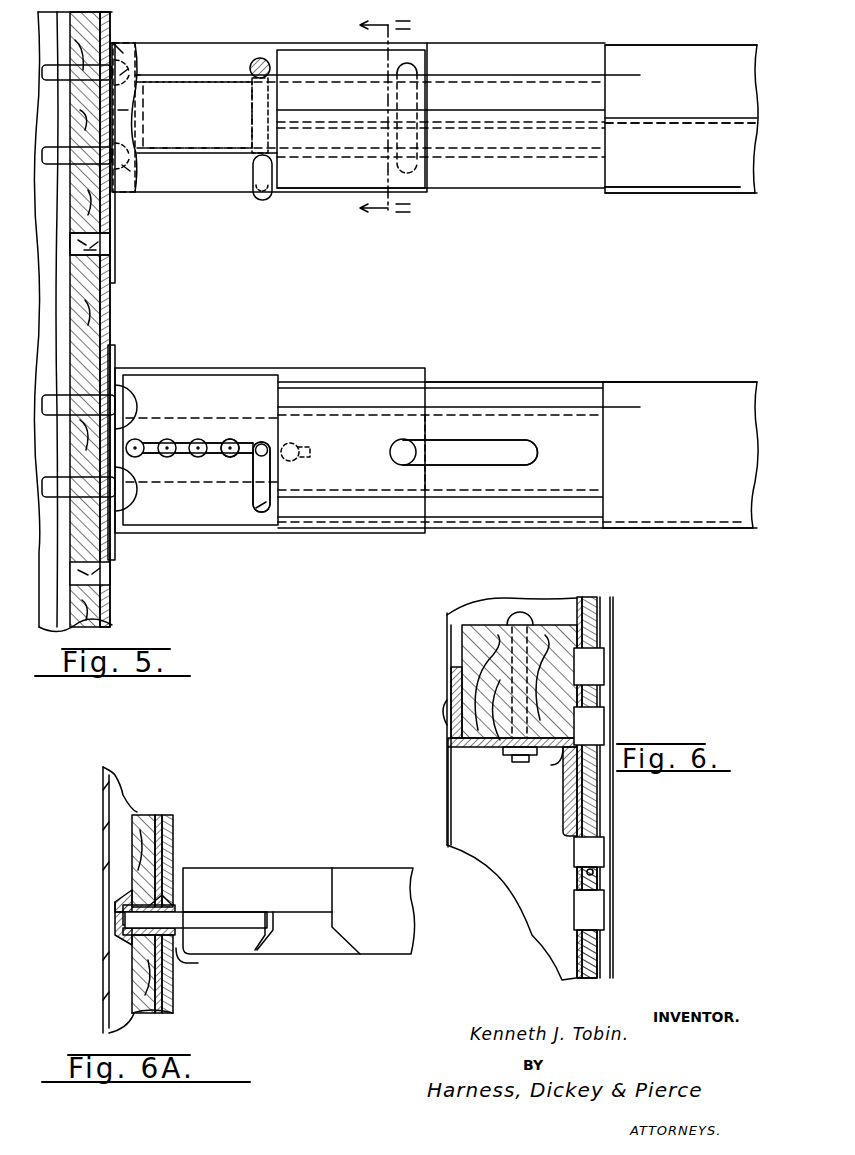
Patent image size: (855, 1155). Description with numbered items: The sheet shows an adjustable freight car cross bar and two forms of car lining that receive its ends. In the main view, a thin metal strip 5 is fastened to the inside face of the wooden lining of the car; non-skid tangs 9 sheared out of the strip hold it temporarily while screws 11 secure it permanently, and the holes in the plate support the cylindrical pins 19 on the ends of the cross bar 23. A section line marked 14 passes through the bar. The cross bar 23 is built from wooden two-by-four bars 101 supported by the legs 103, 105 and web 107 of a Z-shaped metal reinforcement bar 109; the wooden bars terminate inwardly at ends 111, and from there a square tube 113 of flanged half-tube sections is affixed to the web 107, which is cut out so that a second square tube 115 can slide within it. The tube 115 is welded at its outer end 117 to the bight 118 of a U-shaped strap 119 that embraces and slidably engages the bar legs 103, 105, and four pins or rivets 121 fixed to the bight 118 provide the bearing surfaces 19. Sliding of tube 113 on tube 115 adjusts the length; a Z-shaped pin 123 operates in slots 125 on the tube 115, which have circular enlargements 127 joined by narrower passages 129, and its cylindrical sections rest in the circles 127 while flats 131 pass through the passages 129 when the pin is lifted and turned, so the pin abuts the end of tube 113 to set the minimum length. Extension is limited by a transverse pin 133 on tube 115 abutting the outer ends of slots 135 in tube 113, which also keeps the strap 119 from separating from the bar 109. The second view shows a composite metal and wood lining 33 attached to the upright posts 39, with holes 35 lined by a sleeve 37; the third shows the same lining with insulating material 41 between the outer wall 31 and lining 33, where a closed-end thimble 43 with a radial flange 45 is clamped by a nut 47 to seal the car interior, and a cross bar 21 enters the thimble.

In FIG. 5, the metal strip 5 is at (112, 283).
In FIG. 5, the non-skid tangs 9 is at (112, 118).
In FIG. 5, the screws 11 is at (112, 268).
In FIG. 5, the section line 14 is at (371, 115).
In FIG. 5, the cylindrical pins (bearing surfaces) 19 is at (50, 59).
In FIG. 6A, the cross bar 21 is at (325, 865).
In FIG. 5, the cross bar 23 is at (431, 43).
In FIG. 6, the outer wall 31 is at (447, 634).
In FIG. 6A, the outer wall 31 is at (102, 850).
In FIG. 6, the composite lining 33 is at (611, 620).
In FIG. 6A, the composite lining 33 is at (173, 825).
In FIG. 6, the holes 35 is at (600, 870).
In FIG. 6, the sleeve 37 is at (601, 930).
In FIG. 6, the upright posts 39 is at (480, 650).
In FIG. 6A, the upright posts 39 is at (168, 917).
In FIG. 6A, the insulating material 41 is at (150, 812).
In FIG. 6A, the thimble 43 is at (163, 902).
In FIG. 6A, the radial flange 45 is at (201, 961).
In FIG. 6A, the nut 47 is at (120, 940).
In FIG. 5, the wooden 2 x 4's 101 is at (708, 70).
In FIG. 5, the leg 103 is at (508, 47).
In FIG. 5, the leg 105 is at (728, 204).
In FIG. 5, the web 107 is at (725, 128).
In FIG. 5, the Z-shaped metal reinforcement bar 109 is at (693, 186).
In FIG. 5, the ends of the wooden bars 111 is at (603, 72).
In FIG. 5, the square tube 113 is at (568, 60).
In FIG. 5, the second square tube 115 is at (200, 78).
In FIG. 5, the outer end of tube 117 is at (136, 52).
In FIG. 5, the bight 118 is at (142, 78).
In FIG. 5, the U-shaped strap 119 is at (440, 44).
In FIG. 5, the pins or rivets 121 is at (150, 25).
In FIG. 5, the Z-shaped pin 123 is at (270, 55).
In FIG. 5, the slots 125 is at (179, 434).
In FIG. 5, the circular enlargements 127 is at (230, 445).
In FIG. 5, the narrower passages 129 is at (213, 440).
In FIG. 5, the flats 131 is at (250, 97).
In FIG. 5, the transverse pin 133 is at (410, 173).
In FIG. 5, the slots 135 is at (500, 443).